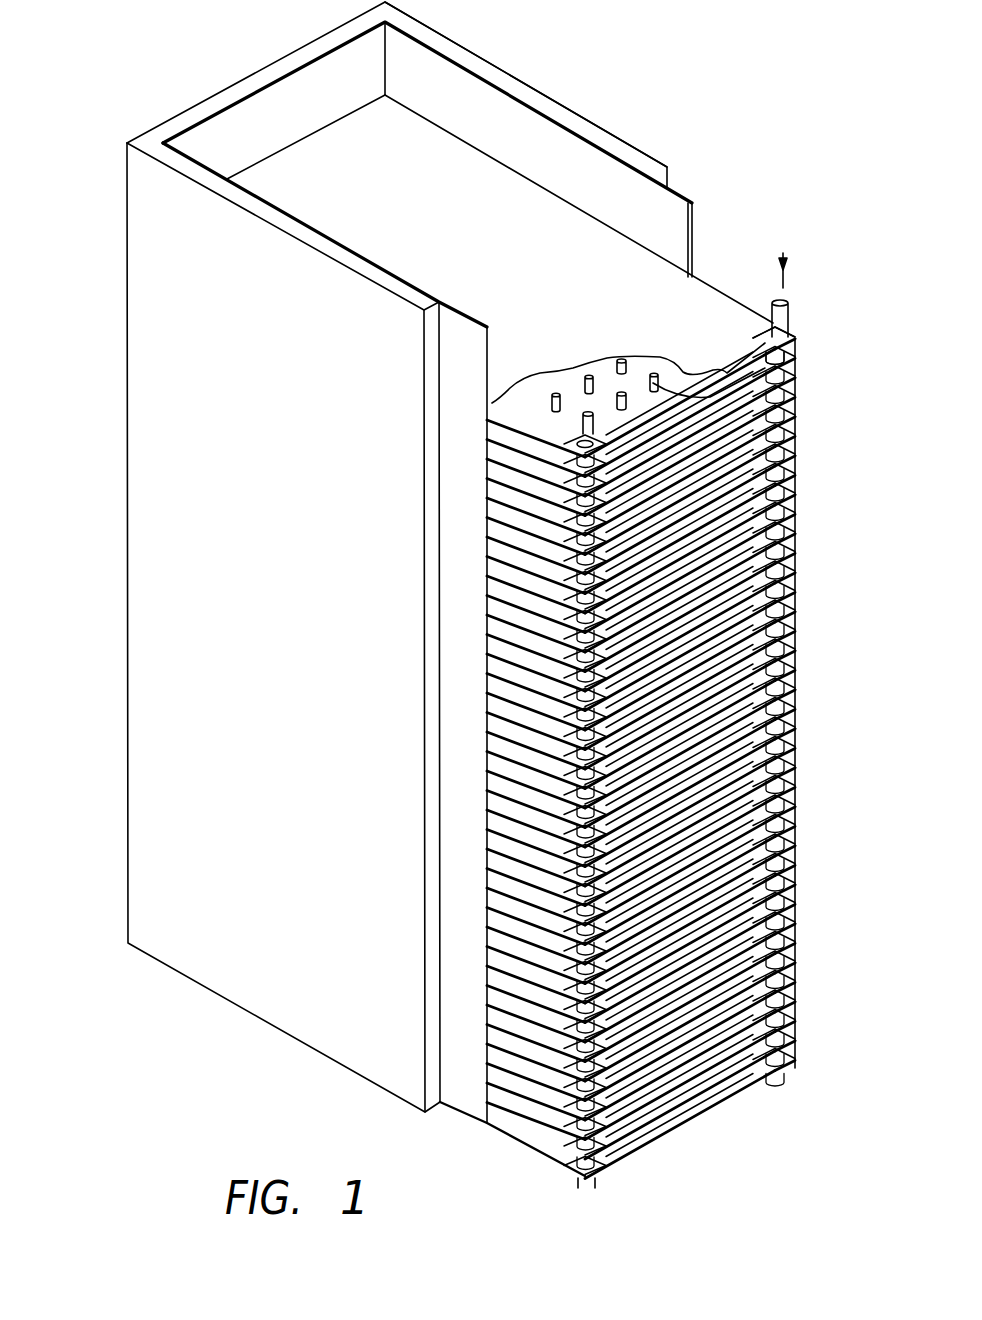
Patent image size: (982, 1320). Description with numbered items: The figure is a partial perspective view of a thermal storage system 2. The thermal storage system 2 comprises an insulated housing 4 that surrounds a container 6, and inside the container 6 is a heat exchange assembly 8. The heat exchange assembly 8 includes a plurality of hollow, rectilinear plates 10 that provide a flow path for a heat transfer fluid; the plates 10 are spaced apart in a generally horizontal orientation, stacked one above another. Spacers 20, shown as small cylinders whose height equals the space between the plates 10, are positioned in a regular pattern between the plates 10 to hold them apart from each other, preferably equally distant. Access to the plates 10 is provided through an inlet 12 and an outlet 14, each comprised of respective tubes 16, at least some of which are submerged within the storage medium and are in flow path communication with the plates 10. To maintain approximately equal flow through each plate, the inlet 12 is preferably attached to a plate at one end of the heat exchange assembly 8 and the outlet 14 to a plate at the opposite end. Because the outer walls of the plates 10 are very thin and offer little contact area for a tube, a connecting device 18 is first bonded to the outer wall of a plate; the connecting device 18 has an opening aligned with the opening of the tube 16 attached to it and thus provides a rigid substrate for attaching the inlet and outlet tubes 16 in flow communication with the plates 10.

The thermal storage system 2 is at (97, 848).
The insulated housing 4 is at (560, 115).
The container 6 is at (680, 193).
The heat exchange assembly 8 is at (679, 746).
The hollow, rectilinear plates 10 is at (712, 300).
The inlet 12 is at (790, 279).
The outlet 14 is at (562, 1182).
The tubes 16 is at (790, 318).
The connecting device 18 is at (790, 342).
The spacers 20 is at (793, 373).